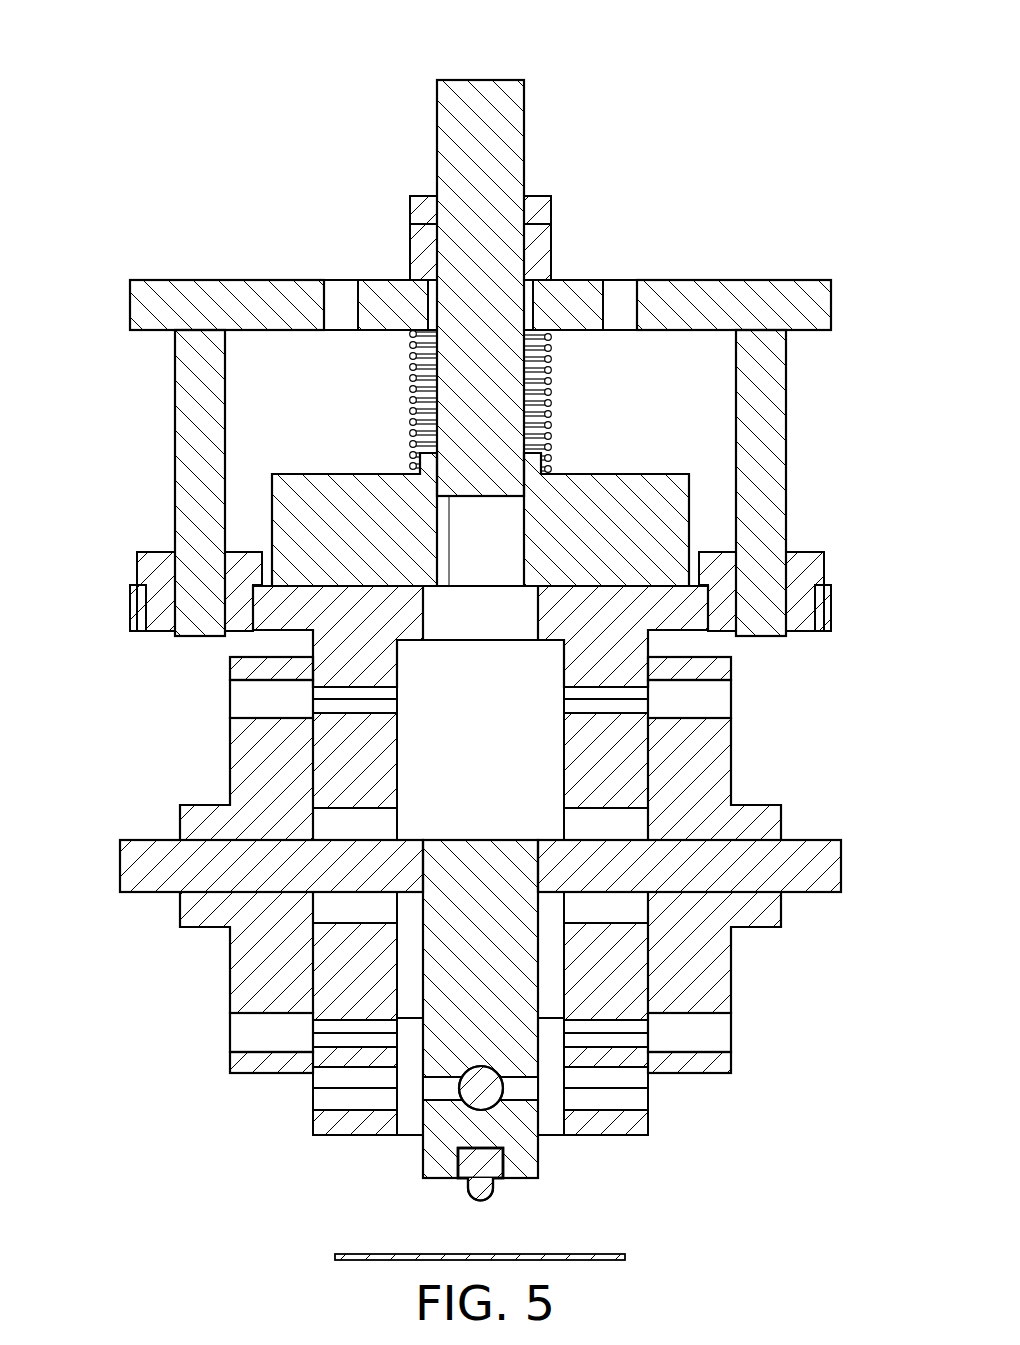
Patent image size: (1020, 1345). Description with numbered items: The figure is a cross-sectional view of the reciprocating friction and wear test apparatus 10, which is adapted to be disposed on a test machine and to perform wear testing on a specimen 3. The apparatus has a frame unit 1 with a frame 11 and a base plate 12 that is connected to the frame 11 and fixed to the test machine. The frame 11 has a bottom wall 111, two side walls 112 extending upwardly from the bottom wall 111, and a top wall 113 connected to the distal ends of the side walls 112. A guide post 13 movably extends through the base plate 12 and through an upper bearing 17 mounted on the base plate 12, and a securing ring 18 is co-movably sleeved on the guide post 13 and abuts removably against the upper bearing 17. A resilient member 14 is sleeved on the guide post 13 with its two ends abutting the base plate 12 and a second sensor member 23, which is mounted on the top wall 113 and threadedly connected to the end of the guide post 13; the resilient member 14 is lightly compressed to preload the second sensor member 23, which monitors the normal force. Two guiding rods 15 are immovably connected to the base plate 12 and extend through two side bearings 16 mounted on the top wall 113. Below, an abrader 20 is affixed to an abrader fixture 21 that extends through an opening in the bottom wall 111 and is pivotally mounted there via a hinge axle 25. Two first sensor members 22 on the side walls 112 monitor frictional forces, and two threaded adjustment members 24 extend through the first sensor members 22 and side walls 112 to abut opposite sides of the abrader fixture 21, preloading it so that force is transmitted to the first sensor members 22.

The frame unit 1 is at (817, 267).
The specimen 3 is at (625, 1257).
The reciprocating friction and wear test apparatus 10 is at (797, 155).
The frame 11 is at (312, 1140).
The bottom wall 111 is at (648, 1122).
The side walls 112 is at (564, 762).
The top wall 113 is at (690, 631).
The base plate 12 is at (677, 280).
The guide post 13 is at (480, 80).
The resilient member 14 is at (410, 419).
The guiding rods 15 is at (175, 457).
The side bearings 16 is at (137, 568).
The upper bearing 17 is at (415, 247).
The securing ring 18 is at (415, 205).
The abrader 20 is at (490, 1190).
The abrader fixture 21 is at (538, 1152).
The first sensor members 22 is at (230, 1003).
The second sensor member 23 is at (590, 474).
The adjustment members 24 is at (120, 858).
The hinge axle 25 is at (468, 1100).